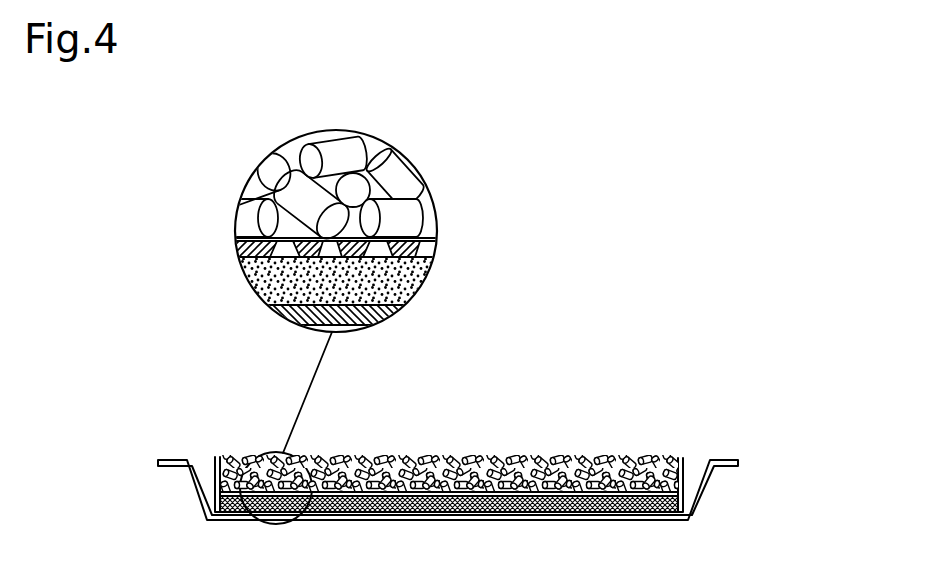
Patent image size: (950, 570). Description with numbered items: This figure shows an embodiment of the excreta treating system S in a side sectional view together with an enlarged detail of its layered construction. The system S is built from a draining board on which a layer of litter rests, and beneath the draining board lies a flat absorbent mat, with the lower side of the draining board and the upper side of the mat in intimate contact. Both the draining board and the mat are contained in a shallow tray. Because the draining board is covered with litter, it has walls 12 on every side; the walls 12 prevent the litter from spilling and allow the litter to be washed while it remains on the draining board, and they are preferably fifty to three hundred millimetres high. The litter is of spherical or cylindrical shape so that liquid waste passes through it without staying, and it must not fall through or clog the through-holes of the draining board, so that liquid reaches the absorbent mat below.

The walls 12 is at (686, 467).
The excreta treating system S is at (446, 421).